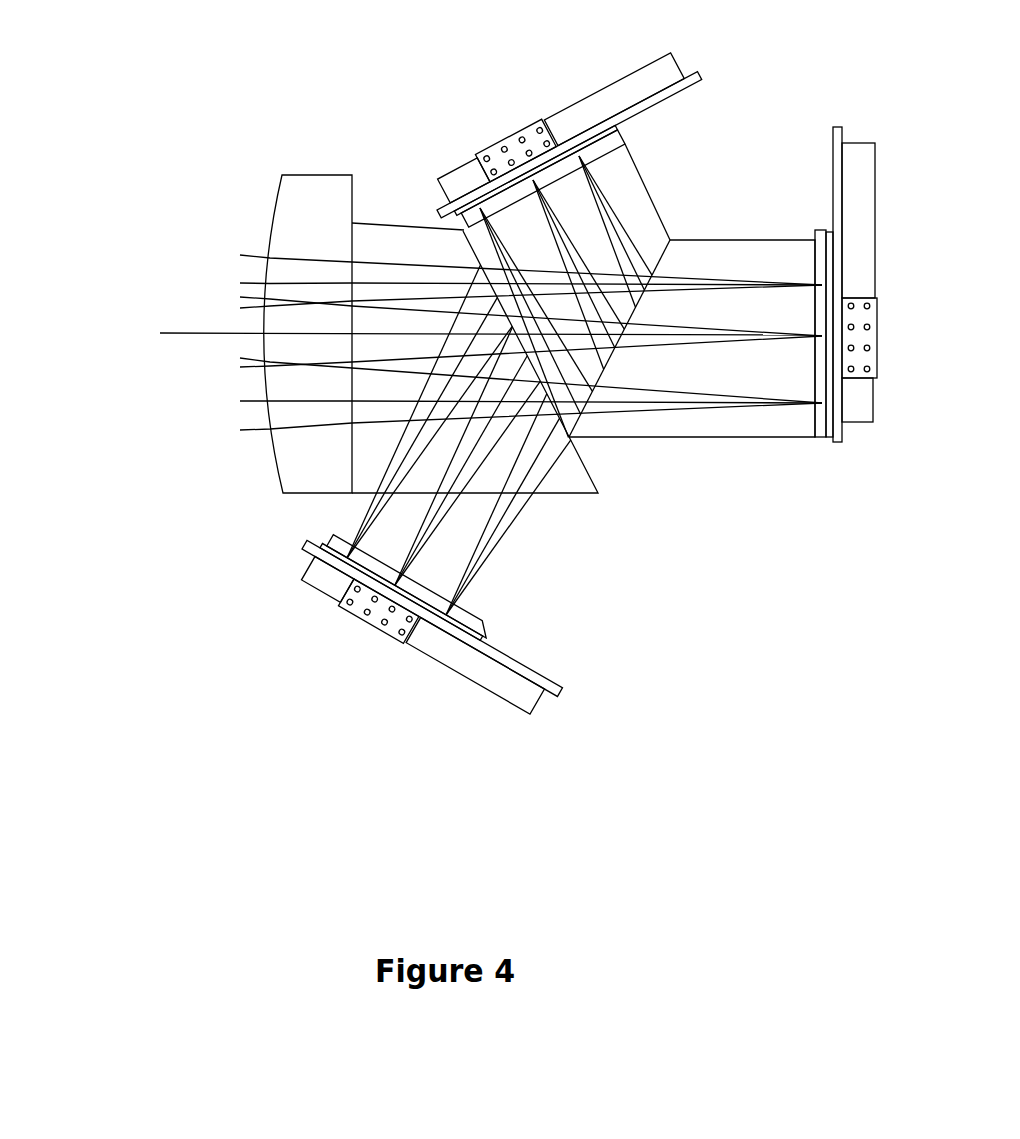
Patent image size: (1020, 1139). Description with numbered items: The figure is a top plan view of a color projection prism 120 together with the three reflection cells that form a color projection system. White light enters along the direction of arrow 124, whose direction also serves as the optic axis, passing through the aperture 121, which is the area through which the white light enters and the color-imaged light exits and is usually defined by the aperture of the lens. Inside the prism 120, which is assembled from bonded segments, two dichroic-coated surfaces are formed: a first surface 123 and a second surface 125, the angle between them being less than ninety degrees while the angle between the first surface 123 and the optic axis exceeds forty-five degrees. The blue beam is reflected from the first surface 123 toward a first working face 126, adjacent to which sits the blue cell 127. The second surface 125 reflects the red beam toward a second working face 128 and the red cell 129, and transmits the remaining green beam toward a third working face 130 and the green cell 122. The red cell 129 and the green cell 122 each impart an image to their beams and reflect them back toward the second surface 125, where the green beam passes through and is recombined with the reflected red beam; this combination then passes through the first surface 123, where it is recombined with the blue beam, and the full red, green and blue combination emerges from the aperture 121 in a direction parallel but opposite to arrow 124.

The color projection prism 120 is at (734, 586).
The aperture 121 is at (310, 164).
The green cell 122 is at (863, 133).
The first surface 123 is at (597, 470).
The arrow 124 is at (188, 377).
The second surface 125 is at (641, 295).
The first working face 126 is at (465, 615).
The blue cell 127 is at (400, 494).
The second working face 128 is at (598, 163).
The red cell 129 is at (561, 228).
The third working face 130 is at (812, 416).